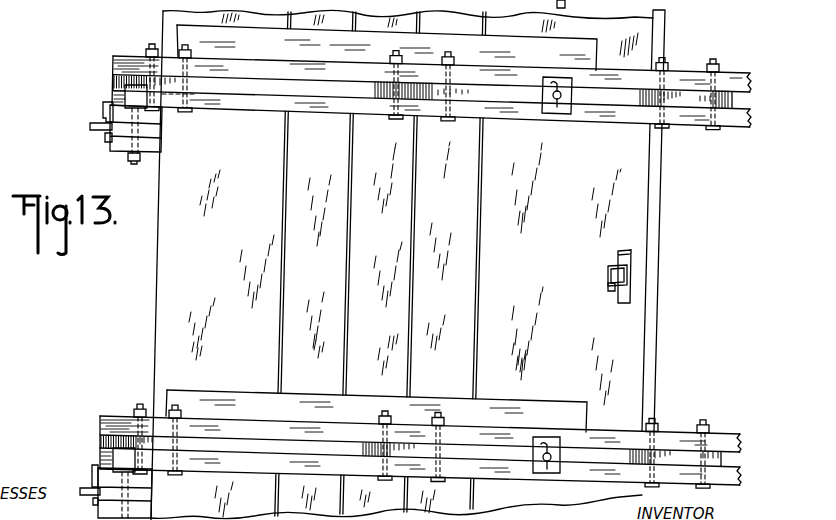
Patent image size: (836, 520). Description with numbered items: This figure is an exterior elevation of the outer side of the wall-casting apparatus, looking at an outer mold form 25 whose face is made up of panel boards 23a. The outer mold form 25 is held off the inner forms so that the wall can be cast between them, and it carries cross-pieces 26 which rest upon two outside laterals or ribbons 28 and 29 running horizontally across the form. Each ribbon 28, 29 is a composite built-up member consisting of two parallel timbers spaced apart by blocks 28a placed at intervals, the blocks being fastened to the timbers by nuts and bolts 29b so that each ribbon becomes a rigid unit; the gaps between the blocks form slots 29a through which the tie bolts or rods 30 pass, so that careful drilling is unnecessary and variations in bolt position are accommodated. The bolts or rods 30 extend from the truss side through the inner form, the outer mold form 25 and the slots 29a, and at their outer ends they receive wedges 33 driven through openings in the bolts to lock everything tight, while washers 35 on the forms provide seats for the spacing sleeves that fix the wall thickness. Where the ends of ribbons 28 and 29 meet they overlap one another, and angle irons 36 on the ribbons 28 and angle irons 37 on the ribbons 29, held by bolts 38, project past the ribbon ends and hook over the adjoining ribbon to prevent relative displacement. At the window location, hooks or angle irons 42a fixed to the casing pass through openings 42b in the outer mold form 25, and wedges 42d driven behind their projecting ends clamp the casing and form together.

The sheathing boards 23a is at (413, 264).
The outer mold form 25 is at (155, 278).
The cross-piece 26 is at (486, 66).
The ribbon 28 is at (259, 66).
The block 28a is at (222, 88).
The ribbon 29 is at (110, 505).
The slot 29a is at (620, 140).
The nuts and bolts 29b is at (392, 418).
The bolt 30 is at (95, 131).
The wedge 33 is at (555, 90).
The washer 35 is at (408, 9).
The angle iron 36 is at (106, 106).
The angle iron 37 is at (126, 93).
The bolt 38 is at (183, 49).
The hook 42a is at (617, 275).
The opening 42b is at (609, 289).
The wedge 42d is at (629, 262).